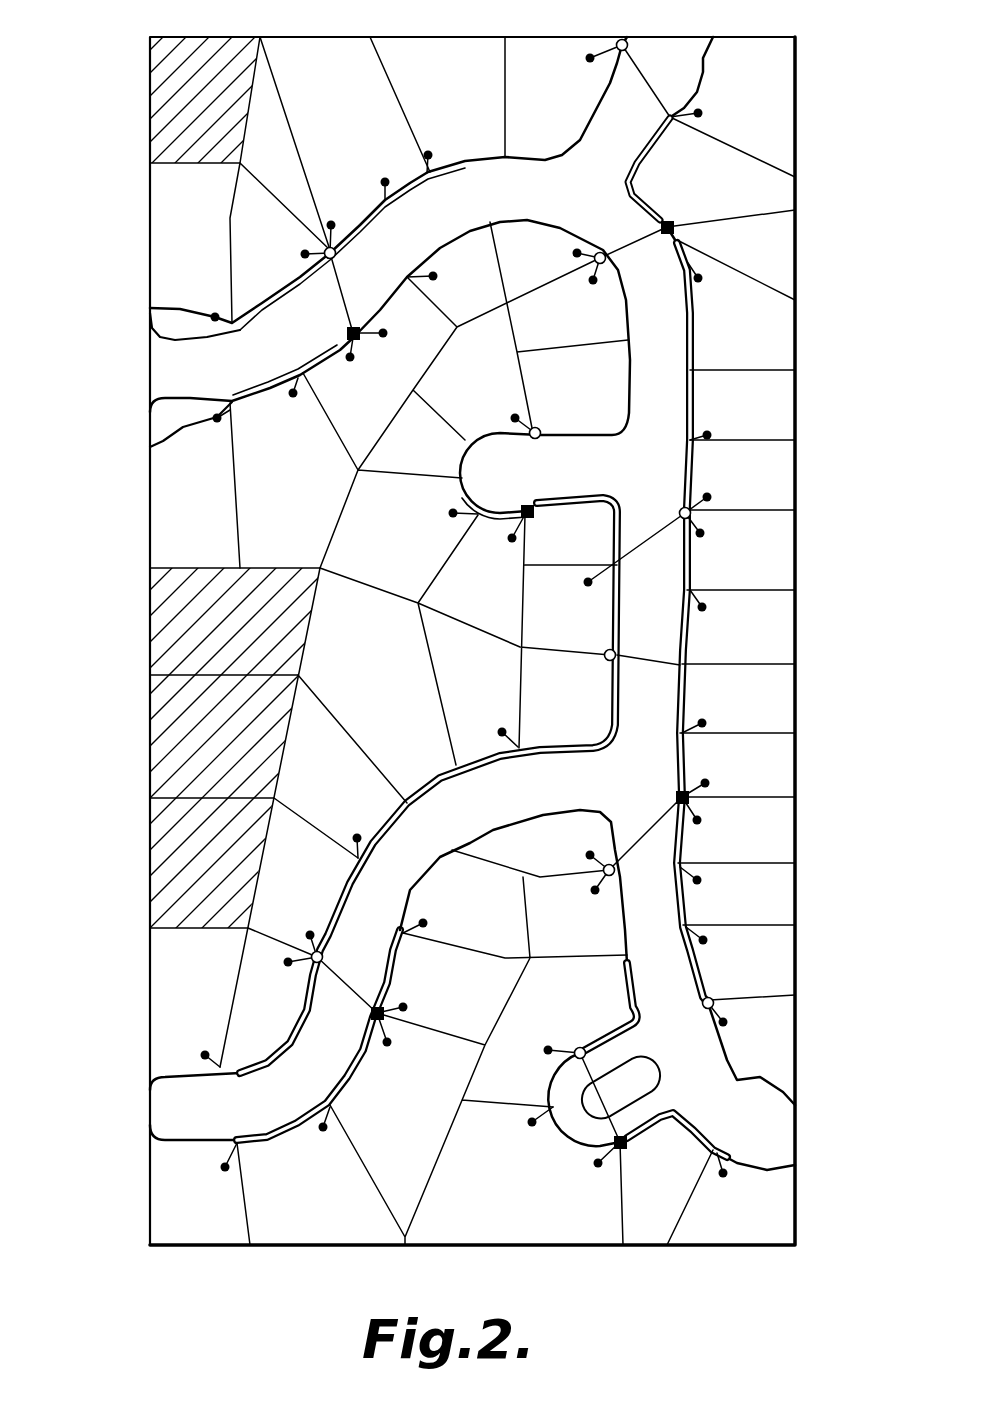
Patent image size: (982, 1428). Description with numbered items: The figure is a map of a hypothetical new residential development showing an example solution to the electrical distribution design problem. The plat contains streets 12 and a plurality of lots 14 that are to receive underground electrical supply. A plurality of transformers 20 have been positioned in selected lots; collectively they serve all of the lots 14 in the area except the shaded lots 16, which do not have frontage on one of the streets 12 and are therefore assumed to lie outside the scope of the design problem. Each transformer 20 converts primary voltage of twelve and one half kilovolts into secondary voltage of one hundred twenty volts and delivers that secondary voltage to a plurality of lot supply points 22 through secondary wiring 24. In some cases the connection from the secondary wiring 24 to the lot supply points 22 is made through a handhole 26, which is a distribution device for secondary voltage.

The streets 12 is at (180, 366).
The lots 14 is at (777, 82).
The shaded lots 16 is at (177, 104).
The transformers 20 is at (355, 345).
The lot supply points 22 is at (150, 308).
The secondary wiring 24 is at (279, 296).
The handhole 26 is at (328, 246).